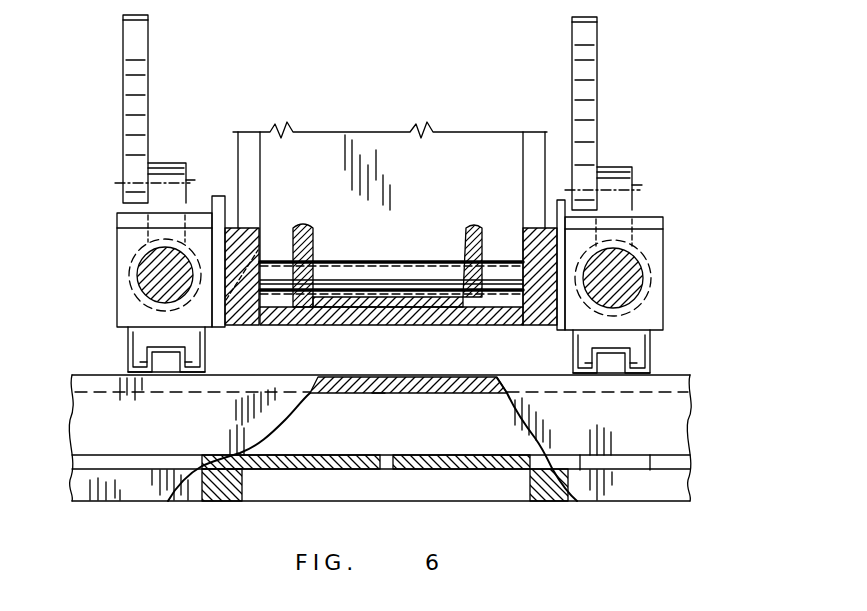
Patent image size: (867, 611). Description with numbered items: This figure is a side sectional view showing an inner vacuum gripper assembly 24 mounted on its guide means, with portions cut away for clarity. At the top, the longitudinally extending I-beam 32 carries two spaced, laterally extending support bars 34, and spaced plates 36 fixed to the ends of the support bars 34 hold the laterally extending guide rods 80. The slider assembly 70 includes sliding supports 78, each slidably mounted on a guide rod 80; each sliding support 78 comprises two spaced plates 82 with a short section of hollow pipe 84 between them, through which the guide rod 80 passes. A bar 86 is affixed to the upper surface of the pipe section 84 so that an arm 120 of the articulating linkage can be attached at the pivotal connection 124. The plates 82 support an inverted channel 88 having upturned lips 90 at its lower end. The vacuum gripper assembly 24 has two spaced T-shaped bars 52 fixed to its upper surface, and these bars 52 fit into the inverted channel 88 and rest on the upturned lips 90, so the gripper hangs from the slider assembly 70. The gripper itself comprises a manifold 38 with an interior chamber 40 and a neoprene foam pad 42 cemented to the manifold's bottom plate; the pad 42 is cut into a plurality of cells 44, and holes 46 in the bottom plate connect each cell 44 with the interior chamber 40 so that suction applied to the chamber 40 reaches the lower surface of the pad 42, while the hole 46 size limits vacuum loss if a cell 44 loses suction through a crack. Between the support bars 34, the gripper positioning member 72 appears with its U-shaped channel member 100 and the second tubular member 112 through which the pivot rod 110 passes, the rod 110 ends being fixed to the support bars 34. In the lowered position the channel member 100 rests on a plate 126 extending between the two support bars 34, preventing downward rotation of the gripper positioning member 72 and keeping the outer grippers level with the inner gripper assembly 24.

The vacuum gripper assembly 24 is at (418, 439).
The I-beam 32 is at (390, 214).
The support bar 34 is at (245, 326).
The plate 36 is at (224, 232).
The manifold 38 is at (466, 378).
The interior chamber 40 is at (370, 396).
The neoprene foam pad 42 is at (130, 500).
The cell 44 is at (200, 496).
The hole 46 is at (393, 456).
The T-shaped bar 52 is at (133, 345).
The slider assembly 70 is at (675, 213).
The gripper positioning member 72 is at (466, 236).
The sliding support 78 is at (135, 270).
The guide rod 80 is at (148, 268).
The plate 82 is at (117, 300).
The hollow pipe section 84 is at (130, 280).
The bar 86 is at (190, 172).
The inverted channel 88 is at (130, 364).
The upturned lip 90 is at (178, 372).
The U-shaped channel member 100 is at (304, 245).
The rod 110 is at (260, 236).
The second tubular member 112 is at (357, 262).
The arm 120 is at (128, 98).
The pivotal connection 124 is at (150, 185).
The plate 126 is at (370, 326).